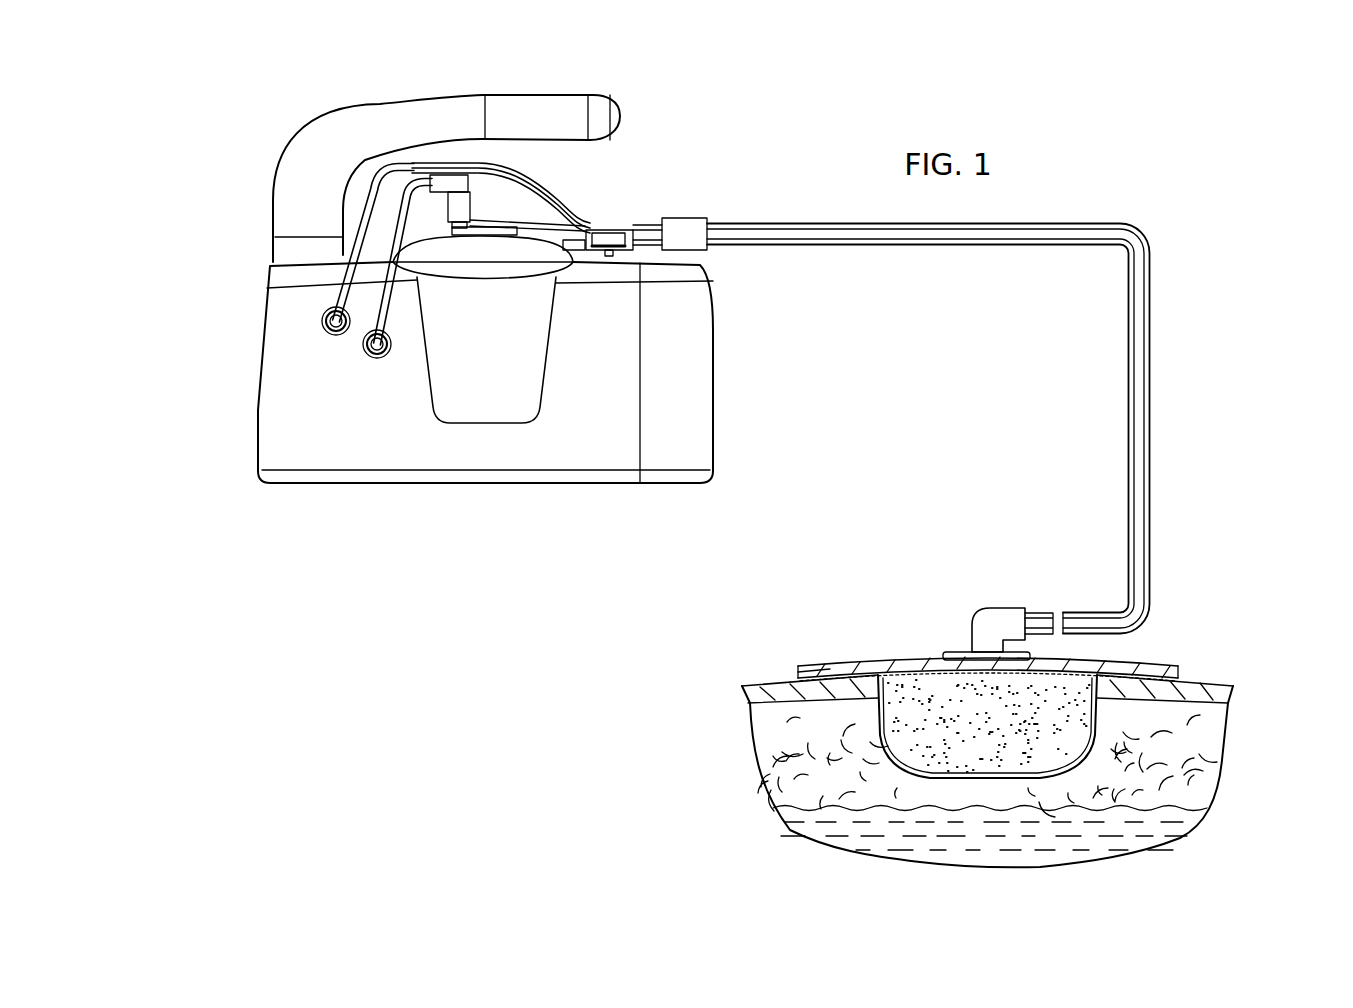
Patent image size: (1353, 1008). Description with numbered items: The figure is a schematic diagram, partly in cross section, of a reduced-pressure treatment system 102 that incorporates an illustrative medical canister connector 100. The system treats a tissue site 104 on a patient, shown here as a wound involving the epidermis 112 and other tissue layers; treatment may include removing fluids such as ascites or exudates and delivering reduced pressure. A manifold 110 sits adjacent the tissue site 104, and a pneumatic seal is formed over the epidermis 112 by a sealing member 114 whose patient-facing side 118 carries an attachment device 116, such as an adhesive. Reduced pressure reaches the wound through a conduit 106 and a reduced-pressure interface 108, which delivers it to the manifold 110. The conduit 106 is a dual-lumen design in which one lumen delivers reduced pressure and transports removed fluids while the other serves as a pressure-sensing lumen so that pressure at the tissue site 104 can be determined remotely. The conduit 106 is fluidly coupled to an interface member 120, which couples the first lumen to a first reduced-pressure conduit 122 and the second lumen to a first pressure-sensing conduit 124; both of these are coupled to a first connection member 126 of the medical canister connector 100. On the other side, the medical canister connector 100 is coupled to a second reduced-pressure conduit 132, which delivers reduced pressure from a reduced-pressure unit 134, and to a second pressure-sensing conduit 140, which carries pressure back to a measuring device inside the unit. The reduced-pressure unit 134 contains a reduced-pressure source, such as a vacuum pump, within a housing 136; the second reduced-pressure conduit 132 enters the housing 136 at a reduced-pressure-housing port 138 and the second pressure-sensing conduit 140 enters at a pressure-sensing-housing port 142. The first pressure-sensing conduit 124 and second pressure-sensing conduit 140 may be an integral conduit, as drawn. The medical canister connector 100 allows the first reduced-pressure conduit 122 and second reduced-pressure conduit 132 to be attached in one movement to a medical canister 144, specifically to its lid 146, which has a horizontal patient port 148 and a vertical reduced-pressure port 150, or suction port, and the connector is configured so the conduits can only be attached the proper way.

The medical canister connector 100 is at (566, 195).
The reduced-pressure treatment system 102 is at (1224, 534).
The tissue site 104 is at (1062, 763).
The conduit 106 is at (1153, 341).
The reduced-pressure interface 108 is at (978, 612).
The manifold 110 is at (966, 738).
The epidermis 112 is at (1236, 693).
The sealing member 114 is at (1142, 658).
The attachment device 116 is at (1180, 668).
The patient-facing side 118 is at (798, 676).
The interface member 120 is at (690, 218).
The first reduced-pressure conduit 122 is at (640, 253).
The first pressure-sensing conduit 124 is at (641, 225).
The first connection member 126 is at (647, 248).
The second reduced-pressure conduit 132 is at (392, 315).
The reduced-pressure unit 134 is at (254, 414).
The housing 136 is at (278, 311).
The reduced-pressure-housing port 138 is at (375, 352).
The second pressure-sensing conduit 140 is at (365, 206).
The pressure-sensing-housing port 142 is at (330, 332).
The medical canister 144 is at (462, 386).
The lid 146 is at (469, 268).
The patient port 148 is at (575, 262).
The reduced-pressure port 150 is at (456, 240).